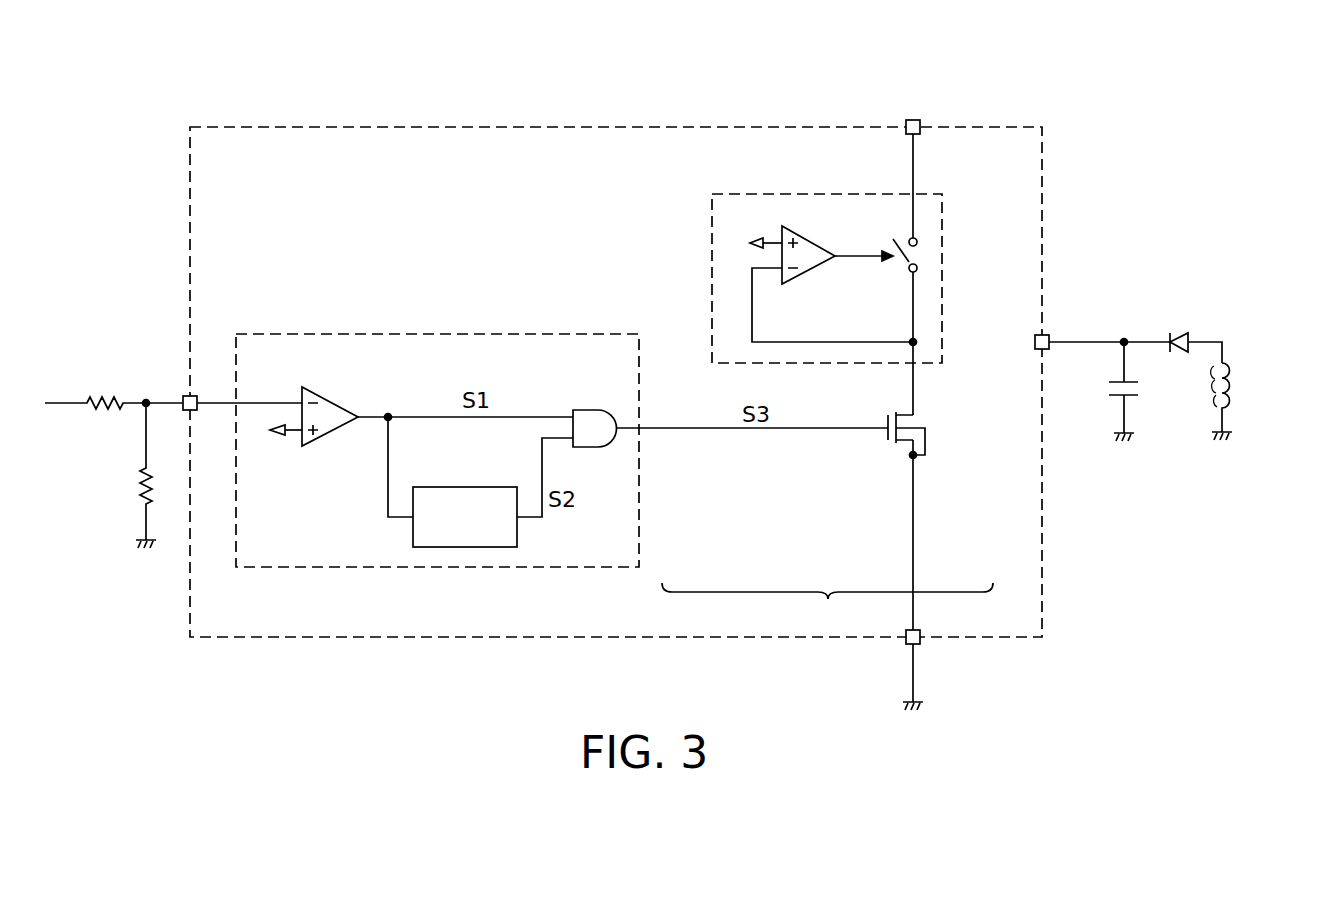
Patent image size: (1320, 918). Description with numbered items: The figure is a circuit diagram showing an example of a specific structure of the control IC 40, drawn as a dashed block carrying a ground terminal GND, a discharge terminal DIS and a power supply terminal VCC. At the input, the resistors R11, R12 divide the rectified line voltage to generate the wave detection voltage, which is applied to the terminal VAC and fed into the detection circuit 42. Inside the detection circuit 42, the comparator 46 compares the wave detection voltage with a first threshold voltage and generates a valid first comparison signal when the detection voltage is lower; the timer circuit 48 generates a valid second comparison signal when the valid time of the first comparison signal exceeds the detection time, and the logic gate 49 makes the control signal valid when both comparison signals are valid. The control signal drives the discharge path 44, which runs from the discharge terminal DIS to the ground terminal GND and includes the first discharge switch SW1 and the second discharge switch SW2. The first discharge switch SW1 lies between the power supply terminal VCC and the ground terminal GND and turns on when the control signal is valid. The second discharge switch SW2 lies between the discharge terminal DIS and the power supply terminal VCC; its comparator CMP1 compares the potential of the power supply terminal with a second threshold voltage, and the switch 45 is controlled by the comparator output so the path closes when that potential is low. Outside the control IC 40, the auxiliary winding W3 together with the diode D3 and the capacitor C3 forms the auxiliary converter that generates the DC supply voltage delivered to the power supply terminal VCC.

The control IC 40 is at (522, 637).
The detection circuit 42 is at (465, 567).
The discharge path 44 is at (827, 605).
The switch 45 is at (897, 268).
The comparator 46 is at (333, 398).
The timer circuit 48 is at (467, 487).
The logic gate 49 is at (585, 409).
The resistor R11 is at (104, 413).
The resistor R12 is at (137, 493).
The wave detection input VAC is at (184, 396).
The discharge terminal DIS is at (918, 120).
The ground terminal GND is at (920, 645).
The power supply terminal VCC is at (1049, 334).
The first discharge switch SW1 is at (928, 432).
The second discharge switch SW2 is at (942, 250).
The comparator CMP1 is at (803, 277).
The capacitor C3 is at (1143, 387).
The diode D3 is at (1181, 333).
The auxiliary winding W3 is at (1236, 394).